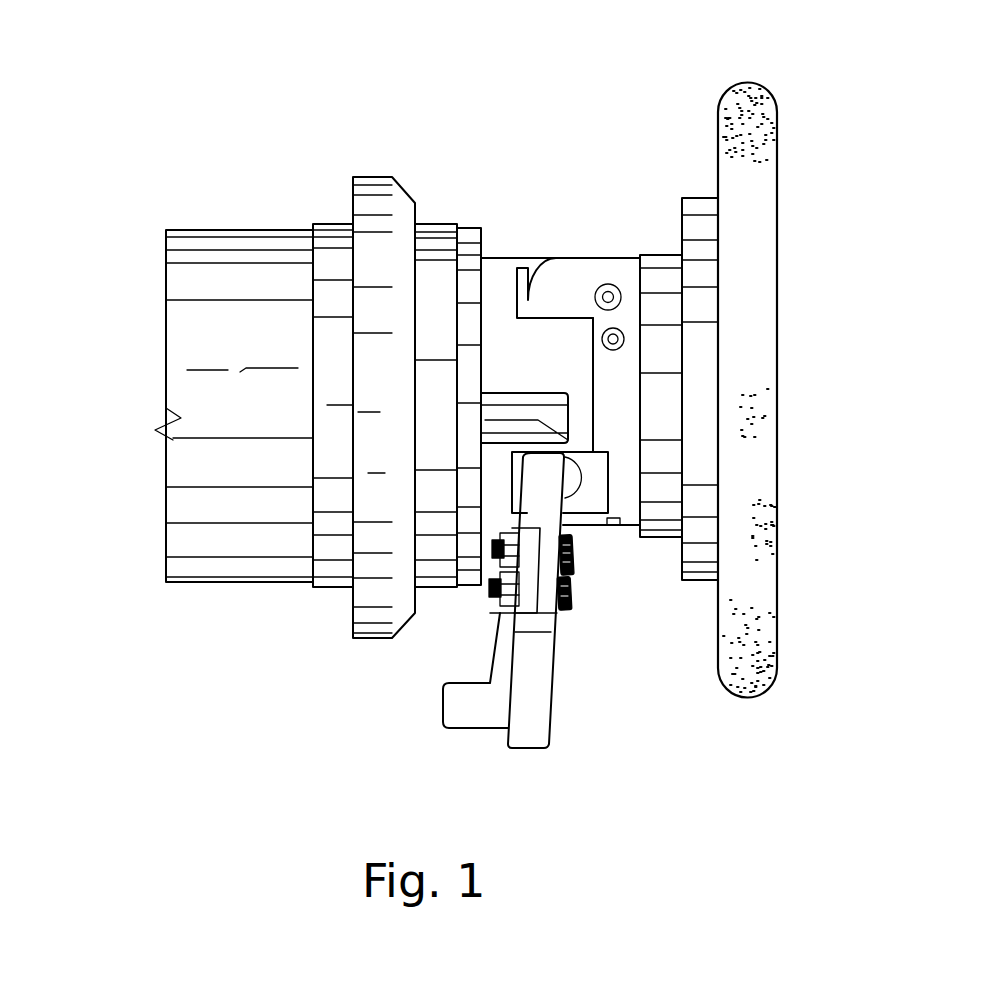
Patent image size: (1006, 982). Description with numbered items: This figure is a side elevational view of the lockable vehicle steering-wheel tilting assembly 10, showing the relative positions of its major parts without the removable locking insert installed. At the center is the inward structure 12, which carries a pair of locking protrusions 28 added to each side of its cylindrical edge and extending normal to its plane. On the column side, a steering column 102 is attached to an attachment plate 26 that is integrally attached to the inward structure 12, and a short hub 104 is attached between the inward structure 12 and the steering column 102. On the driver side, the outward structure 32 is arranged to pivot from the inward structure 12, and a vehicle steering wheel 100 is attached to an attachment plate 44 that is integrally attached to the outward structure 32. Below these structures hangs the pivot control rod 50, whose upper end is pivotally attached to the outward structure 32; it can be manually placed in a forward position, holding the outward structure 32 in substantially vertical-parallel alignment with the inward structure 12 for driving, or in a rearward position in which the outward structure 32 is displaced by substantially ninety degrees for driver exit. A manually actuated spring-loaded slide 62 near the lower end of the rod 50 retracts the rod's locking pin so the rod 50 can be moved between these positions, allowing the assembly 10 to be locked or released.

The lockable vehicle steering-wheel tilting assembly 10 is at (890, 138).
The inward structure 12 is at (497, 272).
The attachment plate 26 is at (472, 243).
The locking protrusions 28 is at (567, 443).
The outward structure 32 is at (617, 265).
The attachment plate 44 is at (697, 215).
The pivot control rod 50 is at (543, 682).
The spring-loaded slide 62 is at (457, 700).
The vehicle steering wheel 100 is at (755, 177).
The steering column 102 is at (313, 217).
The short hub 104 is at (453, 215).